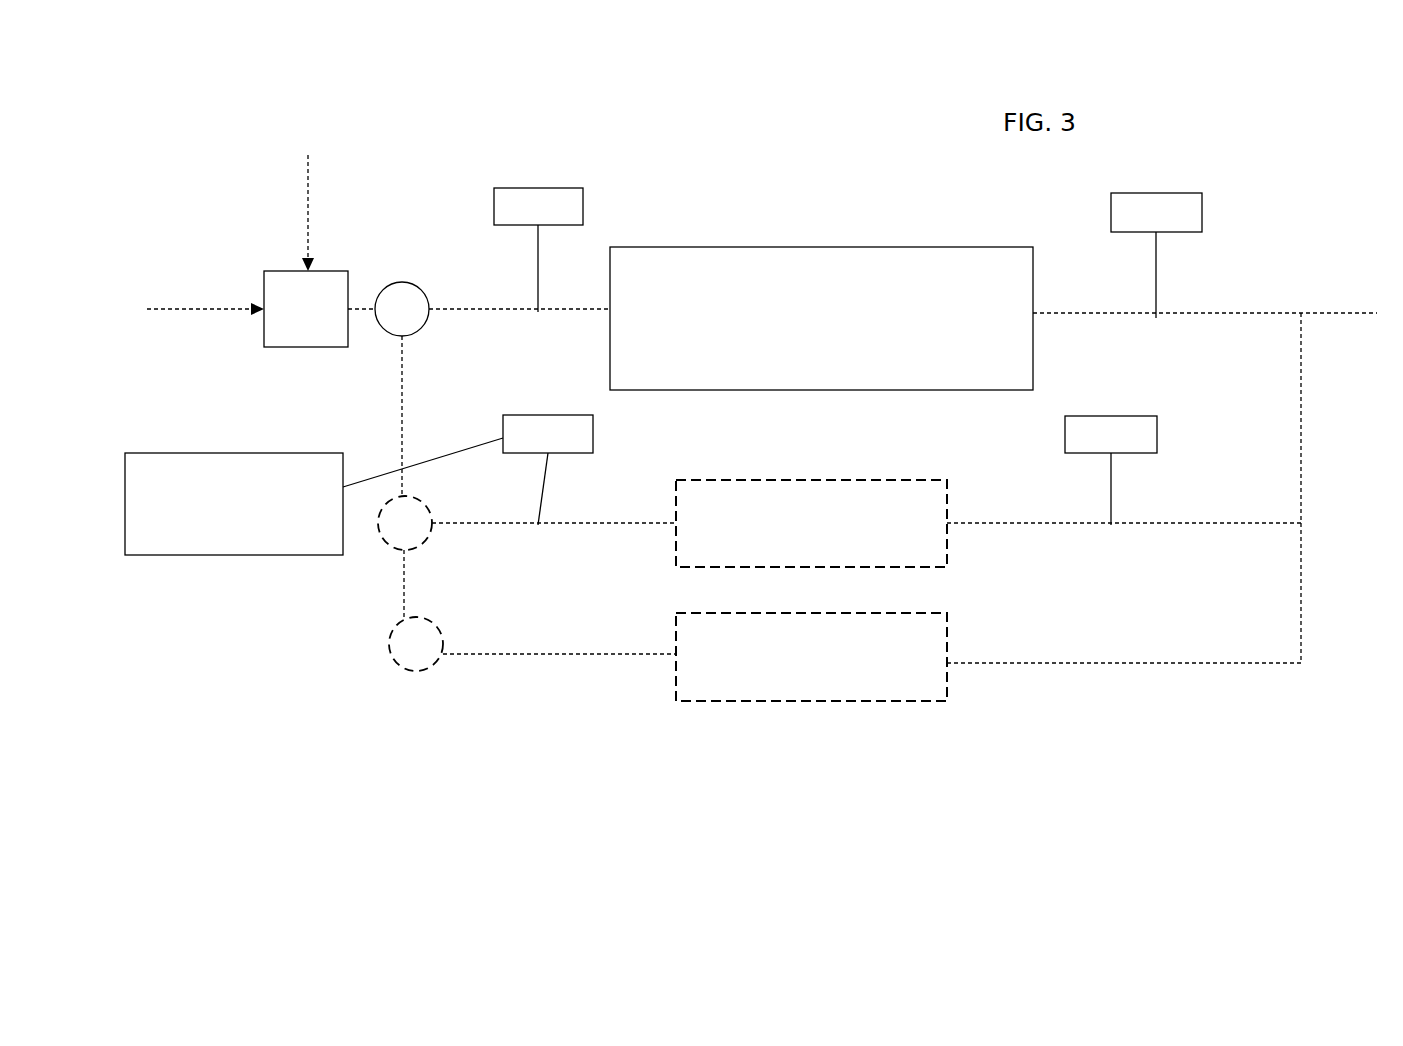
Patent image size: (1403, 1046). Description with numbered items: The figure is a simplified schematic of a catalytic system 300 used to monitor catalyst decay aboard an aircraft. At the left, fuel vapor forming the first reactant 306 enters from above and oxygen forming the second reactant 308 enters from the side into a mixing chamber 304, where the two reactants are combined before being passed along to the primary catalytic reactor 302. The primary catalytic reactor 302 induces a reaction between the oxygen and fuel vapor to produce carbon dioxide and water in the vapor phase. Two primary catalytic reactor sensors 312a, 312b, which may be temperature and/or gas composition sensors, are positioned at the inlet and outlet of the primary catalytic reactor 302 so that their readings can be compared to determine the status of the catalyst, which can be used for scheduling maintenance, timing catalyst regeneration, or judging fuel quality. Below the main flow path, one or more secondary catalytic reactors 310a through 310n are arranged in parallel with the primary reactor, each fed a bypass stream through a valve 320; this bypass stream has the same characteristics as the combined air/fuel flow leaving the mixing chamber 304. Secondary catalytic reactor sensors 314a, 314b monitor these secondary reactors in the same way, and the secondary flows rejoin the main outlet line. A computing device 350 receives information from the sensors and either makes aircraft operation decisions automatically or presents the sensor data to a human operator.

The catalytic system 300 is at (766, 185).
The primary catalytic reactor 302 is at (821, 318).
The mixing chamber 304 is at (306, 309).
The first reactant 306 is at (307, 215).
The second reactant 308 is at (203, 309).
The secondary catalytic reactor 310a is at (811, 523).
The secondary catalytic reactor 310n is at (811, 657).
The primary catalytic reactor sensor 312a is at (538, 250).
The primary catalytic reactor sensor 312b is at (1156, 255).
The secondary catalytic reactor sensor 314a is at (548, 470).
The secondary catalytic reactor sensor 314b is at (1111, 470).
The valve 320 is at (404, 283).
The computing device 350 is at (314, 496).